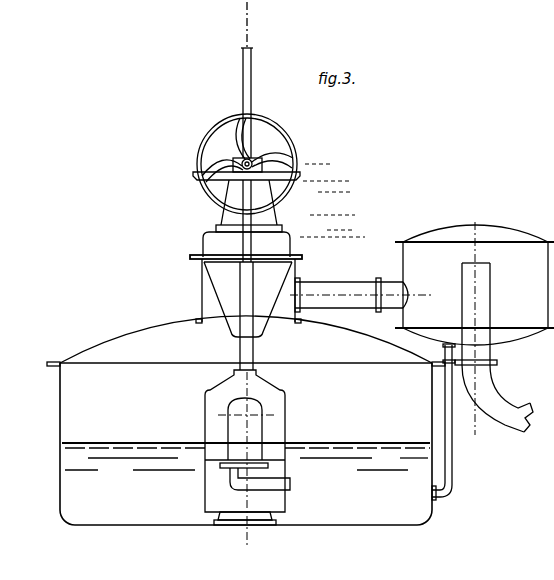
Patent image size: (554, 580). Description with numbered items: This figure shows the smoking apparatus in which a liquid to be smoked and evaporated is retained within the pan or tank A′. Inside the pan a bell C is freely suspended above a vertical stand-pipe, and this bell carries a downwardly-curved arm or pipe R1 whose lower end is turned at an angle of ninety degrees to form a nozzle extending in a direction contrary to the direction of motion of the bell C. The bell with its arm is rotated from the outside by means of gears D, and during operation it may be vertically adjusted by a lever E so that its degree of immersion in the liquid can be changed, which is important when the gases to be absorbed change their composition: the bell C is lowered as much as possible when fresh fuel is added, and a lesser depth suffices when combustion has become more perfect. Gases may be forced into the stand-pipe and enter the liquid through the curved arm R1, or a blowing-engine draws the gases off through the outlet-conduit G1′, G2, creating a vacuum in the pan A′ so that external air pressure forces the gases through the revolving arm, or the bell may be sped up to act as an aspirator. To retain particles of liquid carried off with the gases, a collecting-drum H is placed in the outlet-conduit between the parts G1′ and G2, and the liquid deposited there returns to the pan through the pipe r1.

The lever E is at (252, 72).
The gears D is at (299, 178).
The outlet-conduit G1′ is at (361, 295).
The outlet-conduit G2 is at (494, 328).
The collecting-drum H is at (474, 285).
The pipe r1 is at (448, 422).
The pan or tank A′ is at (246, 420).
The bell C is at (247, 447).
The downwardly-curved pipe or arm R1 is at (247, 429).